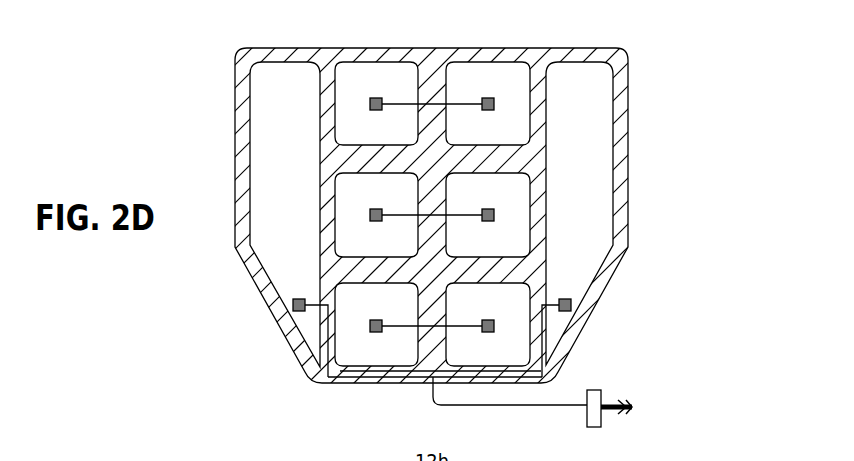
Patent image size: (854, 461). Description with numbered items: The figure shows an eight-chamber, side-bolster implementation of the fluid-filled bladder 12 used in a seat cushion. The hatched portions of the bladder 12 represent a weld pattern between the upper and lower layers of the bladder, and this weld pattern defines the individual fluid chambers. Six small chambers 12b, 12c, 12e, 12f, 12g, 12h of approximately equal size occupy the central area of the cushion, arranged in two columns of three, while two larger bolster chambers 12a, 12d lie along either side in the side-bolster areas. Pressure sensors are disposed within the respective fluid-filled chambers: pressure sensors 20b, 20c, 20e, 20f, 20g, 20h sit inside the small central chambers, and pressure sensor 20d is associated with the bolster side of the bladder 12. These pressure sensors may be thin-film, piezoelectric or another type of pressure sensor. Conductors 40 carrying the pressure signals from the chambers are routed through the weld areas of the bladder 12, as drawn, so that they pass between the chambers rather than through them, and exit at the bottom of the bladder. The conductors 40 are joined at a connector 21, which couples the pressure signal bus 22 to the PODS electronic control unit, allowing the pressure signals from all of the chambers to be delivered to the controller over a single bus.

The fluid-filled bladder 12 is at (713, 243).
The bolster chamber 12a is at (598, 92).
The fluid chamber 12b is at (490, 77).
The fluid chamber 12c is at (378, 77).
The bolster chamber 12d is at (265, 92).
The fluid chamber 12e is at (348, 193).
The fluid chamber 12f is at (525, 195).
The fluid chamber 12g is at (348, 298).
The fluid chamber 12h is at (518, 300).
The pressure sensor 20b is at (495, 108).
The pressure sensor 20c is at (369, 108).
The pressure sensor 20d is at (296, 313).
The pressure sensor 20e is at (369, 220).
The pressure sensor 20f is at (495, 220).
The pressure sensor 20g is at (369, 331).
The pressure sensor 20h is at (495, 331).
The connector 21 is at (586, 428).
The pressure signal bus 22 is at (615, 398).
The conductors 40 is at (512, 405).